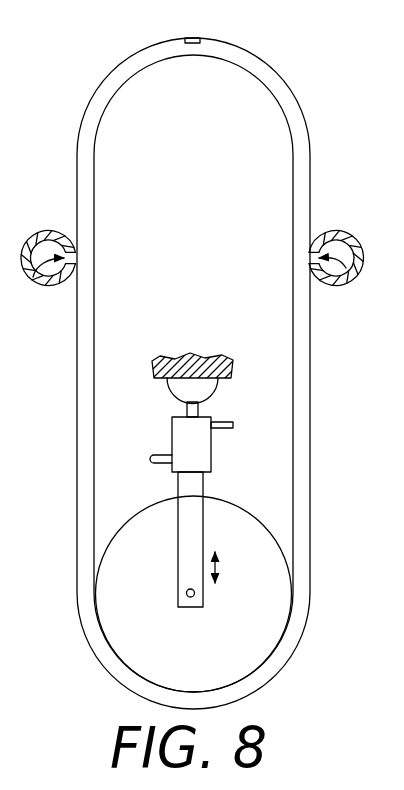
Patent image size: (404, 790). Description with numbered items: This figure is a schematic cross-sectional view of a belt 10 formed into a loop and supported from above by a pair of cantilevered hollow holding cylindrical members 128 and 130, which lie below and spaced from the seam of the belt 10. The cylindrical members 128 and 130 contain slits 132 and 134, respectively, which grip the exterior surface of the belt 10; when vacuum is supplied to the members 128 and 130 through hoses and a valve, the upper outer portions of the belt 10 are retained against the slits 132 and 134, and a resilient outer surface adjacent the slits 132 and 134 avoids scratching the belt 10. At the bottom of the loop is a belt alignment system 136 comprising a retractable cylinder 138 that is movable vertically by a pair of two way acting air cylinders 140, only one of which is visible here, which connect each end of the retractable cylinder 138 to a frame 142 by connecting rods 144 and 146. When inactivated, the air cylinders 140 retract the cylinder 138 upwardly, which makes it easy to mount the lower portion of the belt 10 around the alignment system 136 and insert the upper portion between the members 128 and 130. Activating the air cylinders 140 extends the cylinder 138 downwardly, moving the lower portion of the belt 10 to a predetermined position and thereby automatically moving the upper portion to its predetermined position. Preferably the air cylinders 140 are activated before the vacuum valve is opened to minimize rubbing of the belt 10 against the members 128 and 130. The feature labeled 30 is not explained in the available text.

The belt 10 is at (327, 140).
The vent plug 30 is at (192, 38).
The cantilevered hollow holding cylindrical member 128 is at (53, 230).
The cantilevered hollow holding cylindrical member 130 is at (323, 231).
The slit 132 is at (37, 283).
The slit 134 is at (346, 282).
The belt alignment system 136 is at (241, 442).
The retractable cylinder 138 is at (165, 498).
The two way acting air cylinder 140 is at (172, 432).
The frame 142 is at (171, 352).
The connecting rod 144 is at (205, 490).
The connecting rod 146 is at (186, 410).